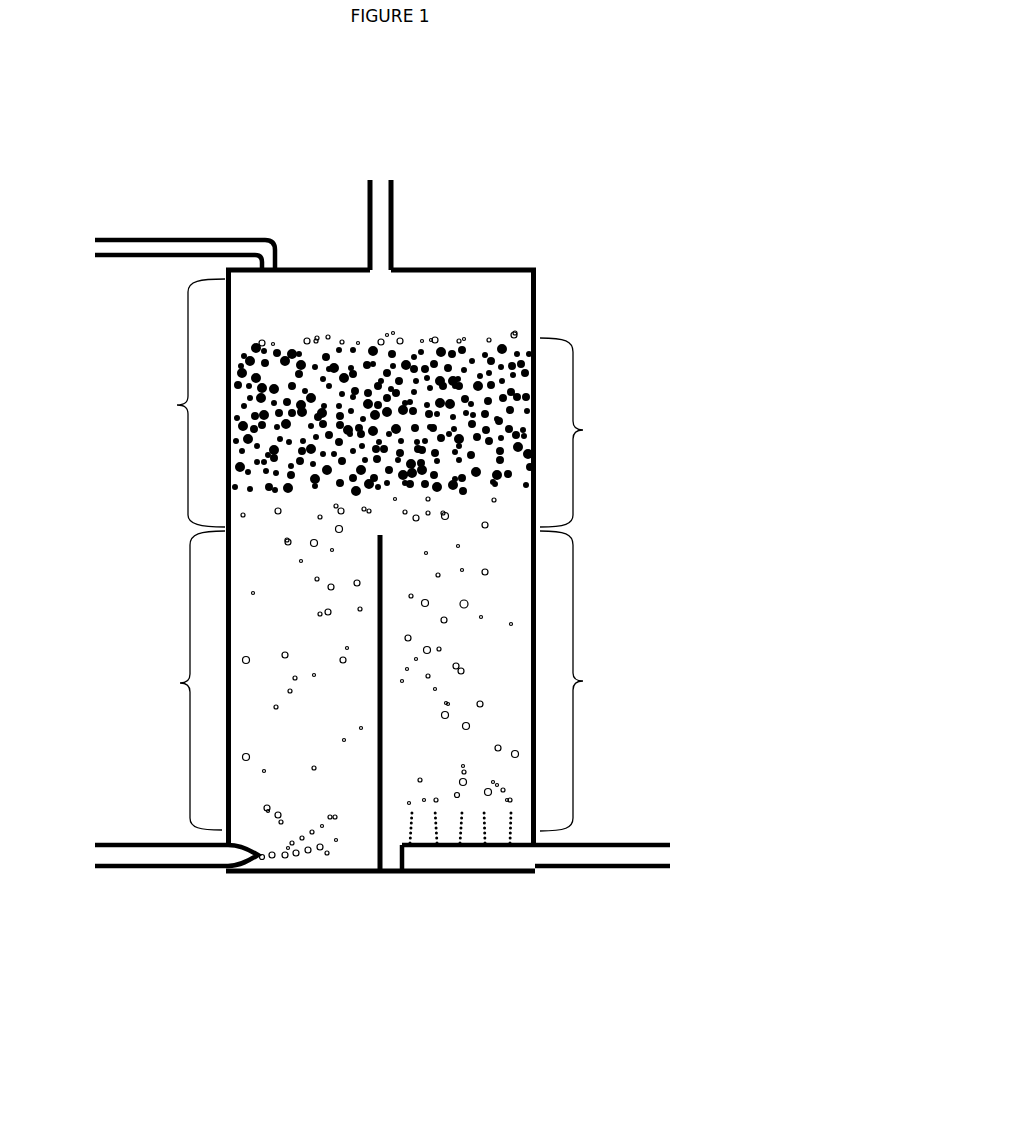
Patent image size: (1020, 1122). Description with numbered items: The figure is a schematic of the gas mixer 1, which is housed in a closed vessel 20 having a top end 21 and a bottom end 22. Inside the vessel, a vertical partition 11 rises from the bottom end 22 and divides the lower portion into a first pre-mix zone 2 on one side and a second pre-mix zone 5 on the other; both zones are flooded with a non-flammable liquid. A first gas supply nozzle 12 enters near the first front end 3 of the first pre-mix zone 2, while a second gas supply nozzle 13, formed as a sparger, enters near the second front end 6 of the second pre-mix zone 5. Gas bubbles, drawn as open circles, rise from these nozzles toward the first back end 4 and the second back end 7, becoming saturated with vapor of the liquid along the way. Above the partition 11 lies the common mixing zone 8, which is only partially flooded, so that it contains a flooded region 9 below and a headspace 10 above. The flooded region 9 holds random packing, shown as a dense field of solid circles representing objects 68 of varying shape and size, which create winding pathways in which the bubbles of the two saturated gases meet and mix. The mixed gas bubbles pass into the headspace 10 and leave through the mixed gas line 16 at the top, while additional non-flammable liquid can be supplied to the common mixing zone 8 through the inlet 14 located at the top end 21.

The gas mixer 1 is at (705, 501).
The first pre-mix zone 2 is at (180, 683).
The first front end 3 is at (320, 854).
The first back end 4 is at (298, 535).
The second pre-mix zone 5 is at (583, 681).
The second front end 6 is at (453, 830).
The second back end 7 is at (452, 535).
The common mixing zone 8 is at (177, 405).
The flooded region 9 is at (583, 430).
The headspace 10 is at (383, 305).
The partition 11 is at (383, 690).
The first gas supply nozzle 12 is at (222, 856).
The second gas supply nozzle 13 is at (497, 857).
The inlet 14 is at (210, 240).
The mixed gas line 16 is at (395, 236).
The closed vessel 20 is at (550, 305).
The top end 21 is at (333, 237).
The bottom end 22 is at (385, 925).
The objects 68 is at (440, 400).